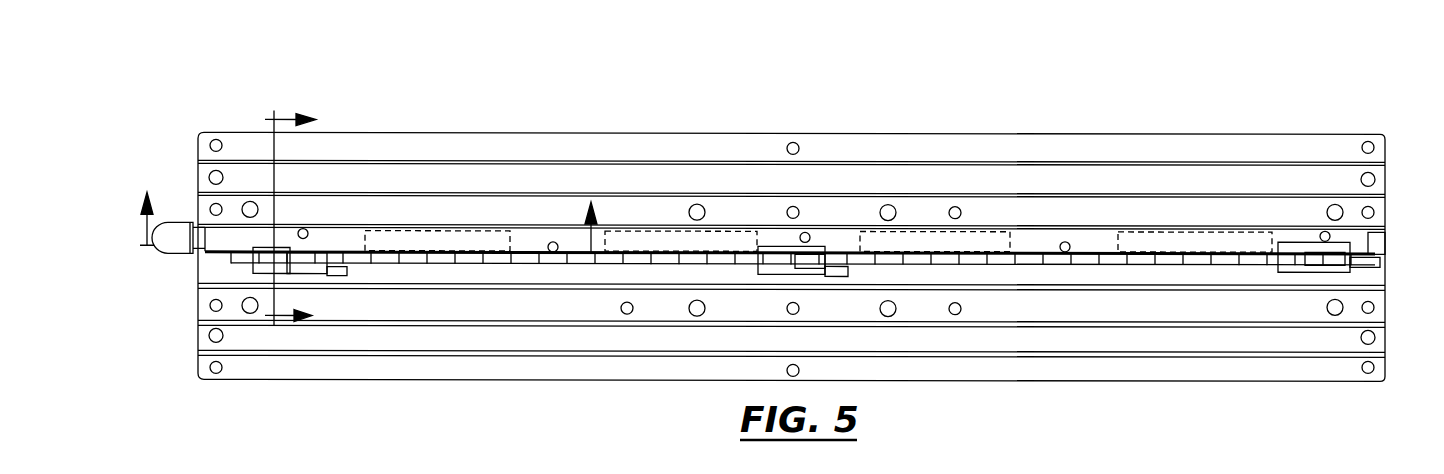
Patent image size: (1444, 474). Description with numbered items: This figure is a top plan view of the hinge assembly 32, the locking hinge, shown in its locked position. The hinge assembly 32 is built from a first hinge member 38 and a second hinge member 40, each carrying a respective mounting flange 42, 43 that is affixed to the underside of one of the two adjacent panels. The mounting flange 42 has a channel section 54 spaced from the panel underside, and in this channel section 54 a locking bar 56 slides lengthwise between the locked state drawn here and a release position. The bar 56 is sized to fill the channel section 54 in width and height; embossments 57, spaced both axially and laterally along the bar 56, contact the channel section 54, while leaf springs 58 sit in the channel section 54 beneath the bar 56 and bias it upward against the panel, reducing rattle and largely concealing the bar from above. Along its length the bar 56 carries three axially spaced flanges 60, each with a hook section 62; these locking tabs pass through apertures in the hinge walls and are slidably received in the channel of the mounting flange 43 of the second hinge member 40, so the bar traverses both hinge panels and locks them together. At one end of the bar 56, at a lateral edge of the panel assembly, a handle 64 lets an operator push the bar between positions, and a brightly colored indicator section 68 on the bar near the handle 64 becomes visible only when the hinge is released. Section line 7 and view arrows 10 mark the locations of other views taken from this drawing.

The hinge assembly 32 is at (1313, 110).
The first hinge member 38 is at (1380, 176).
The second hinge member 40 is at (1383, 311).
The mounting flange 42 is at (252, 200).
The mounting flange 43 is at (250, 313).
The channel section 54 is at (1380, 240).
The locking bar 56 is at (280, 233).
The embossments 57 is at (306, 229).
The leaf springs 58 is at (435, 240).
The flanges 60 is at (300, 273).
The hook section 62 is at (340, 270).
The handle 64 is at (177, 254).
The indicator section 68 is at (210, 246).
The section line 7- 7 is at (292, 218).
The view direction 10 is at (370, 223).